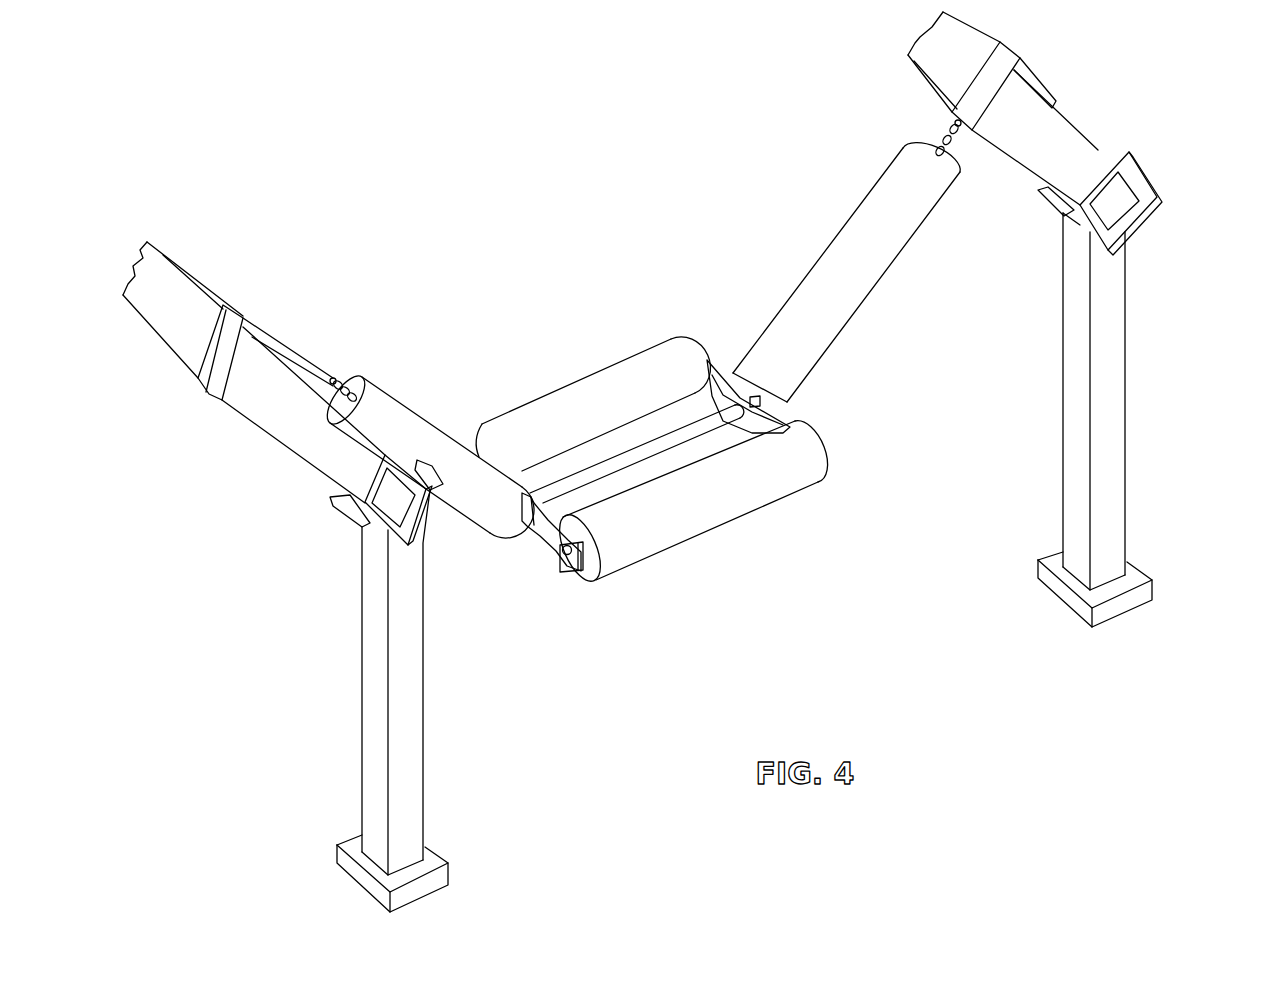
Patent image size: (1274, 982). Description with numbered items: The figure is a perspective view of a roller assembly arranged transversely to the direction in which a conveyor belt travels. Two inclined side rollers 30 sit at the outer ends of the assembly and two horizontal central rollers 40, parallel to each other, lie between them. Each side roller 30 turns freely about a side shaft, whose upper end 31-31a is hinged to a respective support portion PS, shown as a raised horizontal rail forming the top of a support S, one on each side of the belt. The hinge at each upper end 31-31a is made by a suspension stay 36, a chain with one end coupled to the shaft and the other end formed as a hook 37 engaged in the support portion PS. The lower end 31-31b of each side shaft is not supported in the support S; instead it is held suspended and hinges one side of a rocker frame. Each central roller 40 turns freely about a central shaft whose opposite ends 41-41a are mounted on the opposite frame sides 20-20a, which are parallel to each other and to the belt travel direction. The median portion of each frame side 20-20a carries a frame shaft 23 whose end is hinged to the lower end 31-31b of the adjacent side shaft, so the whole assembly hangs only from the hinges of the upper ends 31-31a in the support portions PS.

The hook 37 is at (206, 398).
The support portion PS is at (1097, 140).
The support S is at (1148, 245).
The side shaft upper end 31-31a is at (358, 392).
The suspension stay 36 is at (337, 374).
The side roller 30 is at (434, 416).
The central roller 40 is at (604, 364).
The frame shaft 23 is at (607, 458).
The side shaft lower end 31-31b is at (770, 403).
The rocker frame side 20-20a is at (527, 528).
The central shaft end 41-41a is at (563, 560).